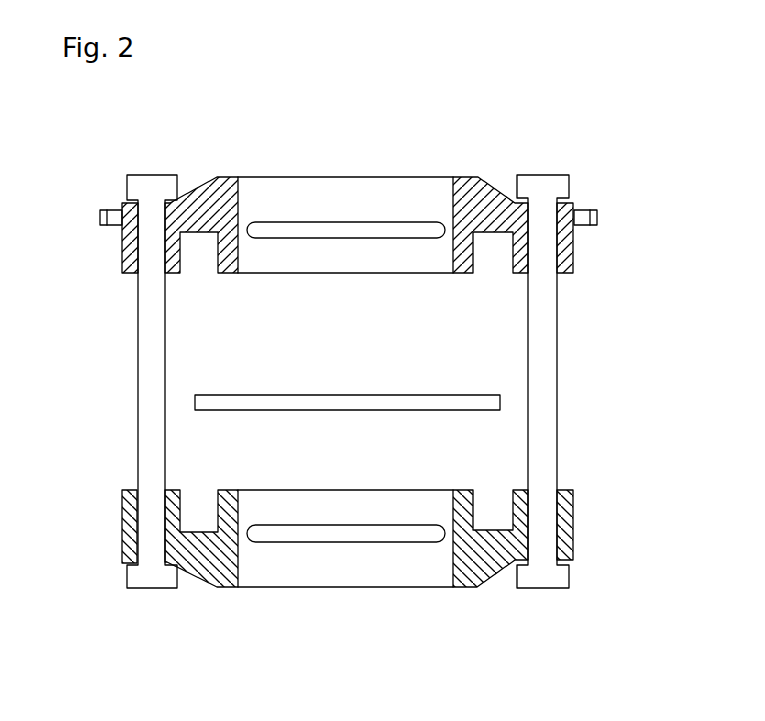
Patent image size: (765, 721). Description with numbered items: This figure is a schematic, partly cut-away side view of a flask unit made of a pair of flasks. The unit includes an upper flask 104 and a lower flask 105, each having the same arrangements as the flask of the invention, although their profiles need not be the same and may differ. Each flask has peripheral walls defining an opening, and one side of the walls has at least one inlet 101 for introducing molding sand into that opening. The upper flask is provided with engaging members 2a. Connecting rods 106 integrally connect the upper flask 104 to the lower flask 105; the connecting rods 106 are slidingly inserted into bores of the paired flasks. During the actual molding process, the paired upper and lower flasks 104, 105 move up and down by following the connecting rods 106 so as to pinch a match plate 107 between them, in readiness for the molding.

The inlet 101 is at (333, 225).
The upper flask 104 is at (483, 180).
The lower flask 105 is at (485, 577).
The connecting rod 106 is at (140, 182).
The engaging member 2a is at (102, 210).
The match plate 107 is at (480, 400).